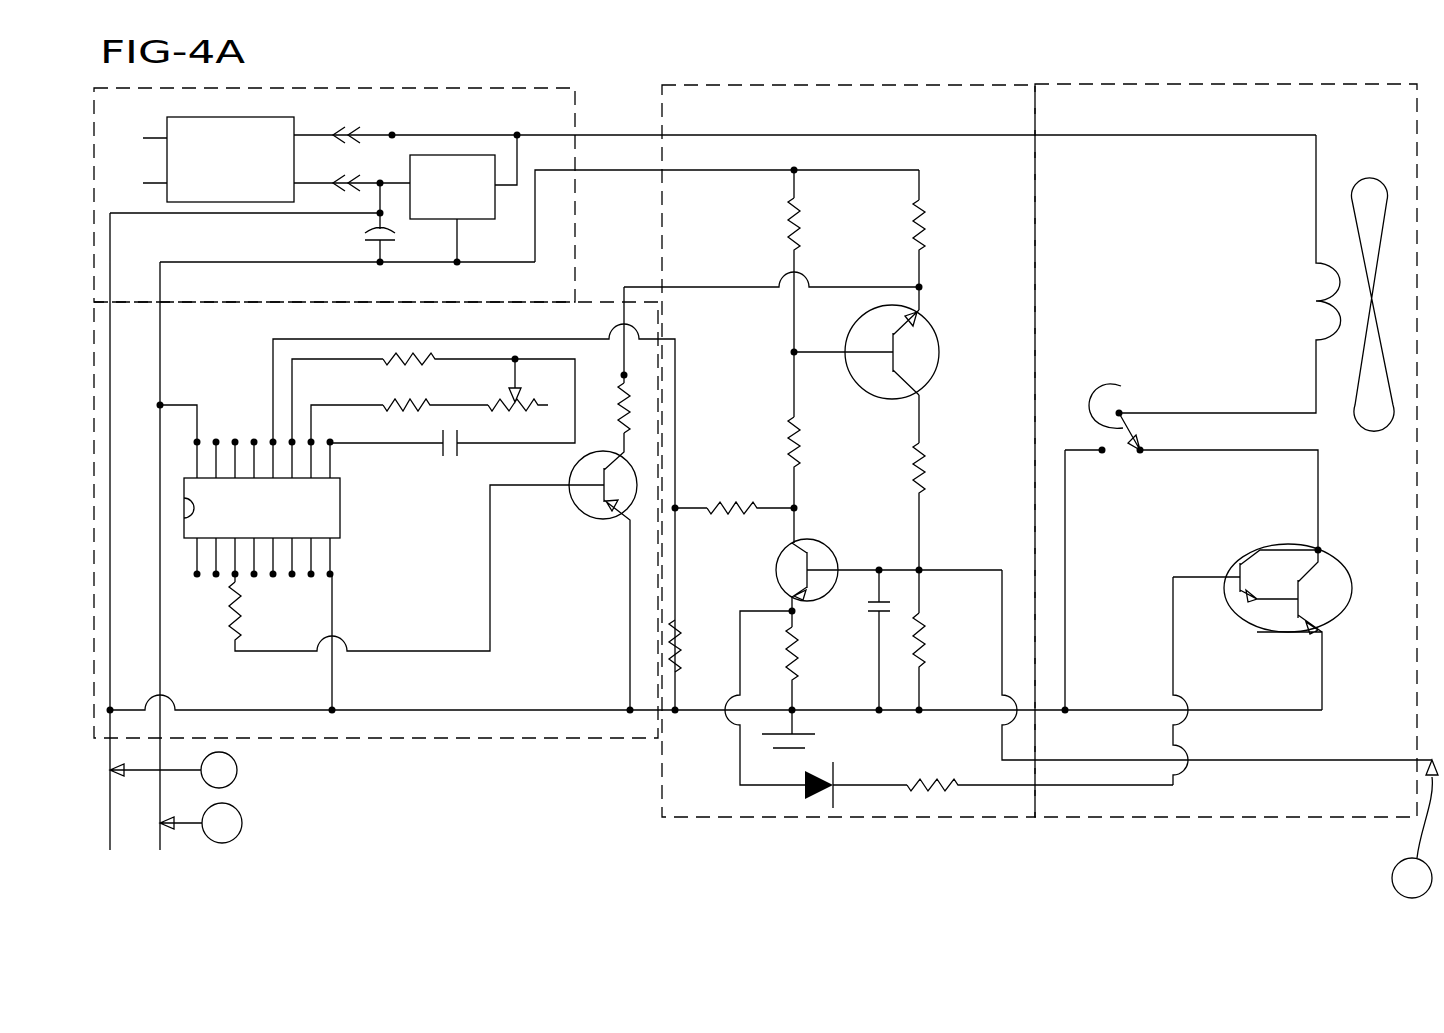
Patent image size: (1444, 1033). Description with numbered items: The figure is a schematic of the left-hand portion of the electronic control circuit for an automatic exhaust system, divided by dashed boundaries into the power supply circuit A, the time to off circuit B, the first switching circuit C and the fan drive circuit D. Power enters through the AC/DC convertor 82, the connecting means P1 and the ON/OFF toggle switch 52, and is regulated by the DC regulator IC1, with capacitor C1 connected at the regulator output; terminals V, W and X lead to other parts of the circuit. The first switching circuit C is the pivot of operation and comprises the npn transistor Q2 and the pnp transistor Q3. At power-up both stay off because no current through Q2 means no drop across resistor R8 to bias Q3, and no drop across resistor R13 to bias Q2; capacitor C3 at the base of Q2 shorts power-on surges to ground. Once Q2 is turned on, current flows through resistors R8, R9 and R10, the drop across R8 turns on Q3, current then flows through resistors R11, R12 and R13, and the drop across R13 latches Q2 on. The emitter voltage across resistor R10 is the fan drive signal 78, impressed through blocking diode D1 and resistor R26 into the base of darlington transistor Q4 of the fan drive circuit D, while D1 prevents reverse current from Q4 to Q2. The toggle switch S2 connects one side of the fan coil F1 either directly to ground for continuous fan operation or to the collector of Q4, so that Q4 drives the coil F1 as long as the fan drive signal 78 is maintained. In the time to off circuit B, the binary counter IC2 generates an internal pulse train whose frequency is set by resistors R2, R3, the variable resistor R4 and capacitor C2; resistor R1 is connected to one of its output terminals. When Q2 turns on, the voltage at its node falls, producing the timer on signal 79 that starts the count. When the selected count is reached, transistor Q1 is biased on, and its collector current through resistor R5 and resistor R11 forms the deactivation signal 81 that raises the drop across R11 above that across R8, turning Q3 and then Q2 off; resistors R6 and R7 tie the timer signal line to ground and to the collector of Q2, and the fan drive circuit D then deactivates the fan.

The AC/DC convertor 82 is at (250, 117).
The ON/OFF toggle switch 52 is at (394, 135).
The deactivation signal 81 is at (690, 287).
The timer on signal 79 is at (677, 405).
The fan drive signal 78 is at (1170, 655).
The power supply circuit A is at (583, 97).
The time to "off" circuit B is at (598, 300).
The first switching circuit C is at (822, 83).
The fan drive circuit D is at (1140, 85).
The connecting means P1 is at (331, 157).
The DC regulator IC1 is at (465, 199).
The binary counter IC2 is at (287, 508).
The capacitor C1 is at (356, 223).
The capacitor C2 is at (396, 457).
The capacitor C3 is at (859, 640).
The resistor R1 is at (376, 568).
The resistor R2 is at (433, 398).
The resistor R3 is at (399, 420).
The variable resistor R4 is at (518, 398).
The resistor R5 is at (606, 360).
The resistor R6 is at (696, 646).
The resistor R7 is at (734, 494).
The resistor R8 is at (768, 260).
The resistor R9 is at (769, 446).
The resistor R10 is at (807, 679).
The resistor R11 is at (887, 240).
The resistor R12 is at (890, 482).
The resistor R13 is at (944, 640).
The resistor R26 is at (1040, 768).
The transistor Q1 is at (603, 571).
The npn transistor Q2 is at (889, 570).
The pnp transistor Q3 is at (866, 356).
The darlington transistor Q4 is at (1309, 627).
The blocking diode D1 is at (816, 712).
The fan coil F1 is at (1256, 283).
The toggle switch S2 is at (1120, 385).
The terminal V is at (173, 770).
The terminal W is at (201, 823).
The terminal X is at (1415, 829).